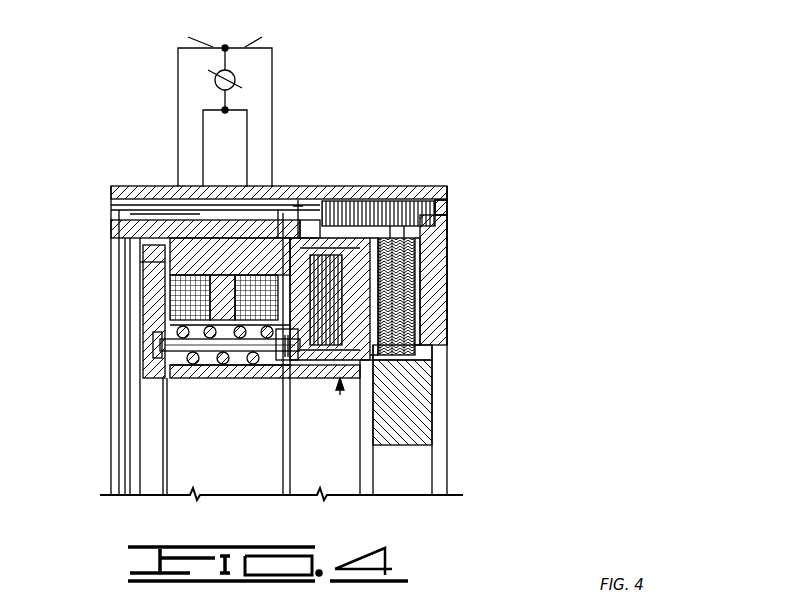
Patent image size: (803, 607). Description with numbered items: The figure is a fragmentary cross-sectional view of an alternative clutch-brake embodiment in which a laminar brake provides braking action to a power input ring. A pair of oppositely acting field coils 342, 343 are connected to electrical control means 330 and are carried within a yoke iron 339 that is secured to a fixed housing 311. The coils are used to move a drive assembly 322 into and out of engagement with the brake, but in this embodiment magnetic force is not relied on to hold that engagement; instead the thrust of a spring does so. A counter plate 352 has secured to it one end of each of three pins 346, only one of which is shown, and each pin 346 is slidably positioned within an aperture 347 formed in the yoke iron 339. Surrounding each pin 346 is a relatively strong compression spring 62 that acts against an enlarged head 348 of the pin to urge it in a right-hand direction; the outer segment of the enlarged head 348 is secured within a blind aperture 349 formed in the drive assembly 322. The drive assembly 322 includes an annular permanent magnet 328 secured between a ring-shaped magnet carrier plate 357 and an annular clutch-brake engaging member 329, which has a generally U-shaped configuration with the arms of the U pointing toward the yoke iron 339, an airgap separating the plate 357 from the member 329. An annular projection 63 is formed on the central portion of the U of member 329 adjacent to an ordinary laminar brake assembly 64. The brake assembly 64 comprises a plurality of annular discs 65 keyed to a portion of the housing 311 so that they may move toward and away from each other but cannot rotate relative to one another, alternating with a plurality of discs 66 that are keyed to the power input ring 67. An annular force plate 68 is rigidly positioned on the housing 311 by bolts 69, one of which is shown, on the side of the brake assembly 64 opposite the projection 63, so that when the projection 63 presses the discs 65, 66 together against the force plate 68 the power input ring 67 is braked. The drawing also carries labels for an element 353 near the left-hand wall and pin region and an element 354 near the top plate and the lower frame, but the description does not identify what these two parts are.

The electrical control means 330 is at (283, 50).
The fixed housing 311 is at (140, 186).
The yoke iron 339 is at (130, 214).
The bearing 353 is at (140, 262).
The field coil 342 is at (190, 287).
The field coil 343 is at (160, 300).
The counter plate 352 is at (143, 322).
The aperture 347 is at (177, 333).
The pin 346 is at (153, 347).
The compression spring 62 is at (215, 378).
The enlarged head 348 is at (276, 375).
The blind aperture 349 is at (286, 360).
The cover 354 is at (278, 213).
The magnet carrier plate 357 is at (298, 200).
The annular permanent magnet 328 is at (340, 203).
The clutch-brake engaging member 329 is at (362, 203).
The annular discs 65 is at (418, 203).
The bolts 69 is at (448, 205).
The annular force plate 68 is at (432, 262).
The laminar brake assembly 64 is at (418, 298).
The annular projection 63 is at (400, 318).
The discs 66 is at (405, 374).
The power input ring 67 is at (415, 432).
The drive assembly 322 is at (340, 395).